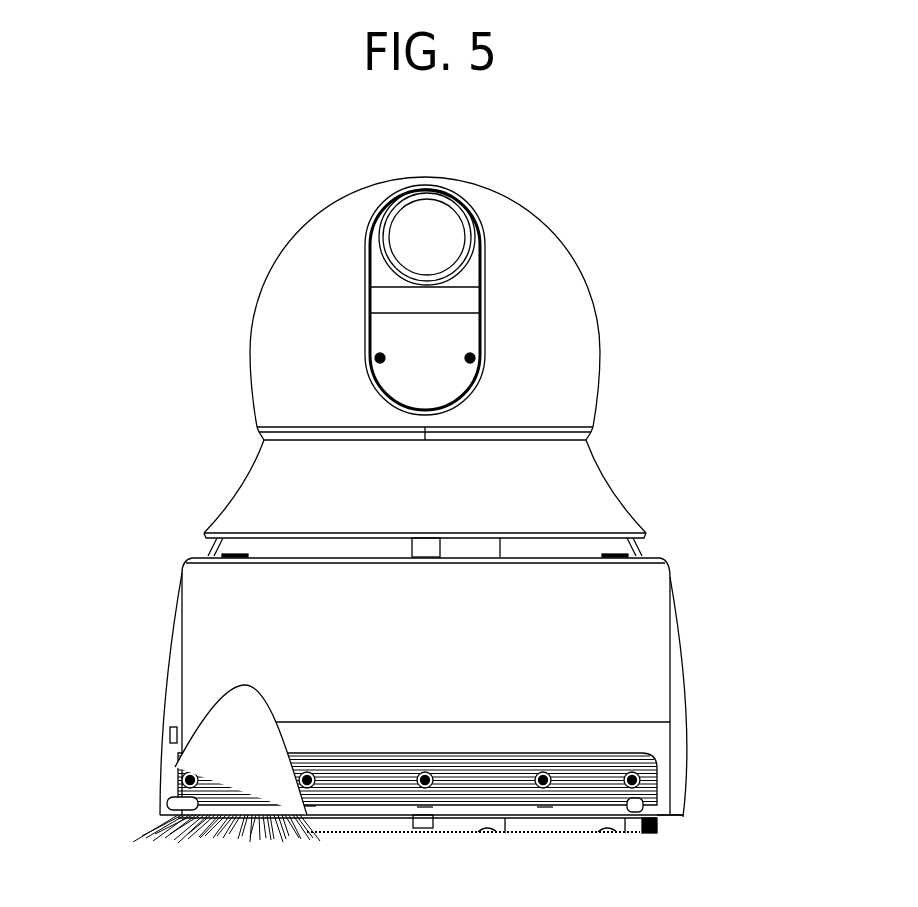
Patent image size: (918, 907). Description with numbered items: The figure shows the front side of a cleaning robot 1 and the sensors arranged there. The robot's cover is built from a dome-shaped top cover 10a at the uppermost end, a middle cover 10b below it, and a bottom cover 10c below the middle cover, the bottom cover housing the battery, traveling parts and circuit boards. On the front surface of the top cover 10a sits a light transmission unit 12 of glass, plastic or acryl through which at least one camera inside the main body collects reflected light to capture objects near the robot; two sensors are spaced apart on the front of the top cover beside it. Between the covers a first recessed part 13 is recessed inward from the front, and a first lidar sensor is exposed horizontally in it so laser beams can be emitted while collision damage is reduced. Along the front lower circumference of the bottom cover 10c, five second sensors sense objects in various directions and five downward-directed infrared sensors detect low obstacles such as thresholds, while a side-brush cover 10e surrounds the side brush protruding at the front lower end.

The cleaning robot 1 is at (540, 155).
The top cover 10a is at (329, 227).
The middle cover 10b is at (241, 488).
The bottom cover 10c is at (193, 628).
The side-brush cover 10e is at (245, 800).
The light transmission unit 12 is at (485, 268).
The first recessed part 13 is at (195, 545).